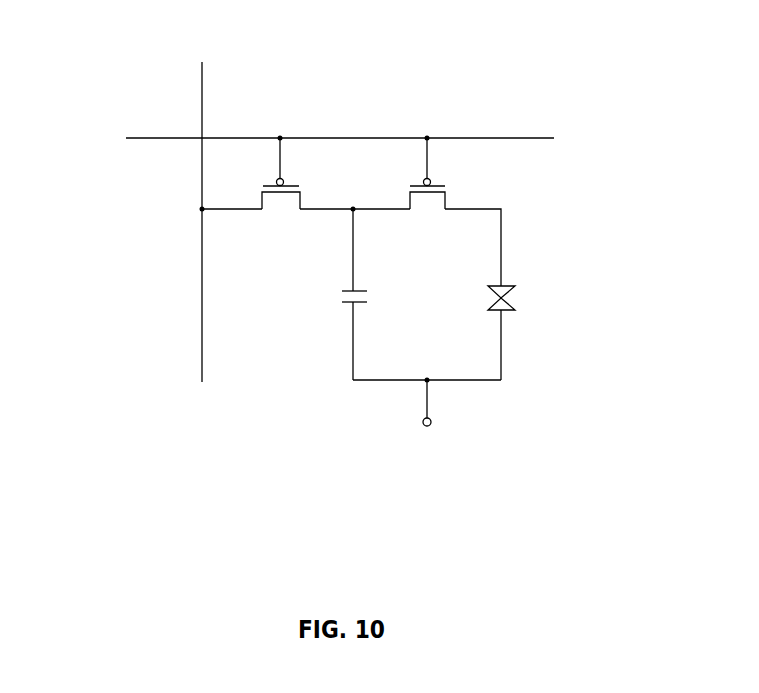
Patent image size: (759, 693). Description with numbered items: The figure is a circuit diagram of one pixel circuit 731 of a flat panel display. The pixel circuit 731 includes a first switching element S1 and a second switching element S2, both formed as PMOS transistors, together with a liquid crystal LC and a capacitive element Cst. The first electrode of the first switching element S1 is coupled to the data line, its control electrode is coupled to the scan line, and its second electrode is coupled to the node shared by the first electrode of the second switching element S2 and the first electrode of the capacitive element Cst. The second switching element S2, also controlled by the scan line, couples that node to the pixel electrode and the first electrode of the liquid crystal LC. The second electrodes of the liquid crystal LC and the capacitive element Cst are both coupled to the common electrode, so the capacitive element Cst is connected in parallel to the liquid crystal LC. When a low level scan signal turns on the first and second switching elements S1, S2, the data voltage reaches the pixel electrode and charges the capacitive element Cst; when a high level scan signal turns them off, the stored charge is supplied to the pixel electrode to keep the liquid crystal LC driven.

The pixel circuit 731 is at (567, 67).
The first switching element S1 is at (281, 190).
The second switching element S2 is at (427, 191).
The capacitive element Cst is at (337, 294).
The liquid crystal LC is at (518, 333).